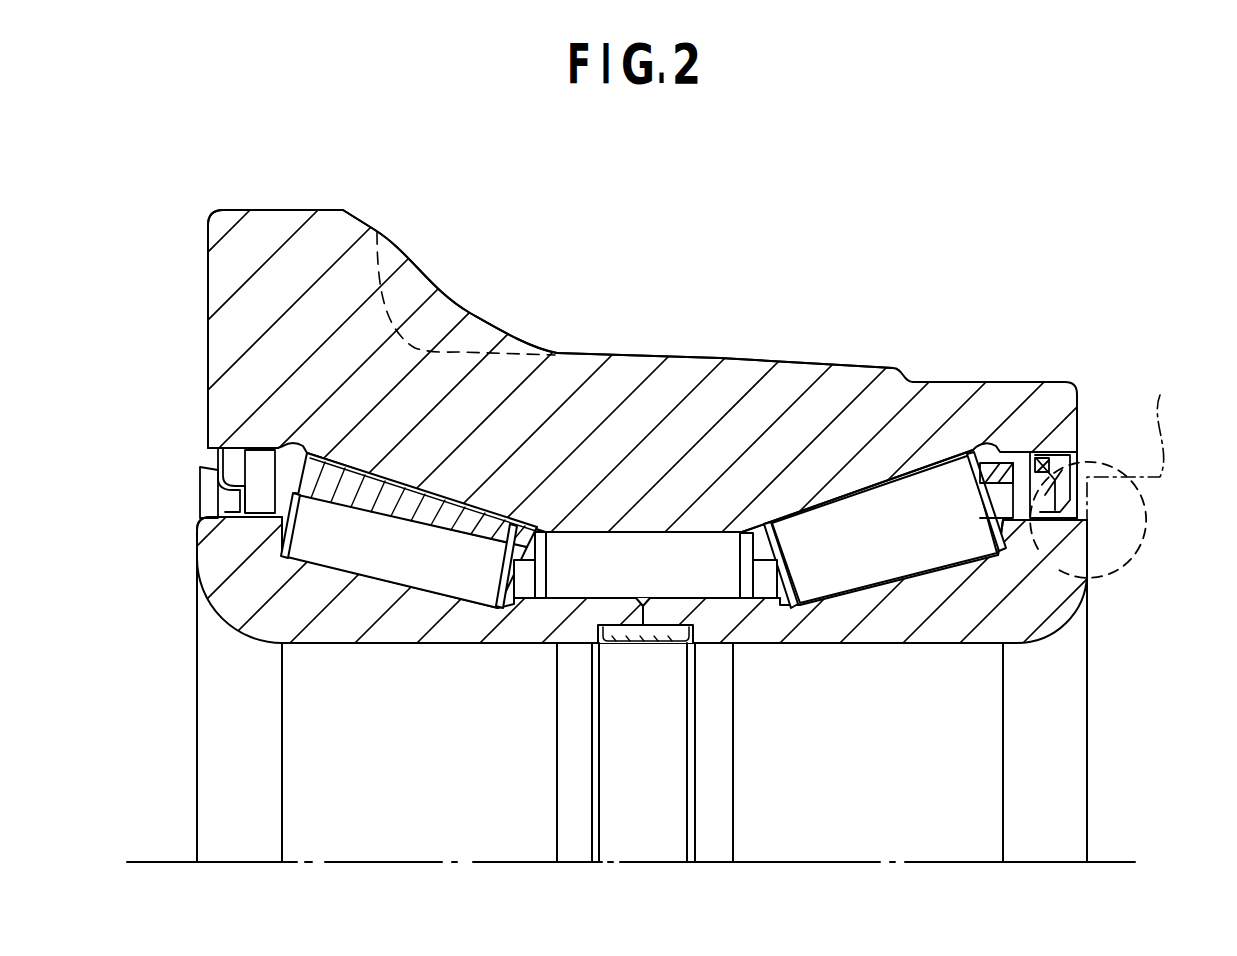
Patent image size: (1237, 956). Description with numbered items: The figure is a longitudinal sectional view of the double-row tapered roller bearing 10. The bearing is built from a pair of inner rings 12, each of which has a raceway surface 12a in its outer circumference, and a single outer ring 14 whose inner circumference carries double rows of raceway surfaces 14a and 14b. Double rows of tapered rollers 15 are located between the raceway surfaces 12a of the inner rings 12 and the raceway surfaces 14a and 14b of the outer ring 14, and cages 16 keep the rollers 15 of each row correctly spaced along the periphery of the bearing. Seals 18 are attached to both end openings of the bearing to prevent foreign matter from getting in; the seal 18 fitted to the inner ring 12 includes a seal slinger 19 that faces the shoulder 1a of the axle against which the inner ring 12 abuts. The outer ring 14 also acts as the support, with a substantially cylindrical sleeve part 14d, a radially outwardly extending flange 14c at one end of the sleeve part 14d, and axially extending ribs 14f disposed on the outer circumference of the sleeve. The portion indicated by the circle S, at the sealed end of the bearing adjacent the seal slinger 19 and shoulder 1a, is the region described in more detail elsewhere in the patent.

The double-row tapered roller bearing 10 is at (841, 288).
The inner ring 12 is at (205, 573).
The raceway surface 12a is at (371, 566).
The outer ring 14 is at (626, 355).
The raceway surface 14a is at (453, 500).
The raceway surface 14b is at (928, 472).
The flange 14c is at (272, 220).
The sleeve part 14d is at (692, 370).
The rib 14f is at (422, 280).
The tapered roller 15 is at (425, 567).
The cage 16 is at (484, 556).
The seal 18 is at (202, 497).
The seal slinger 19 is at (1080, 463).
The shoulder 1a is at (1143, 445).
The circle S is at (1135, 543).